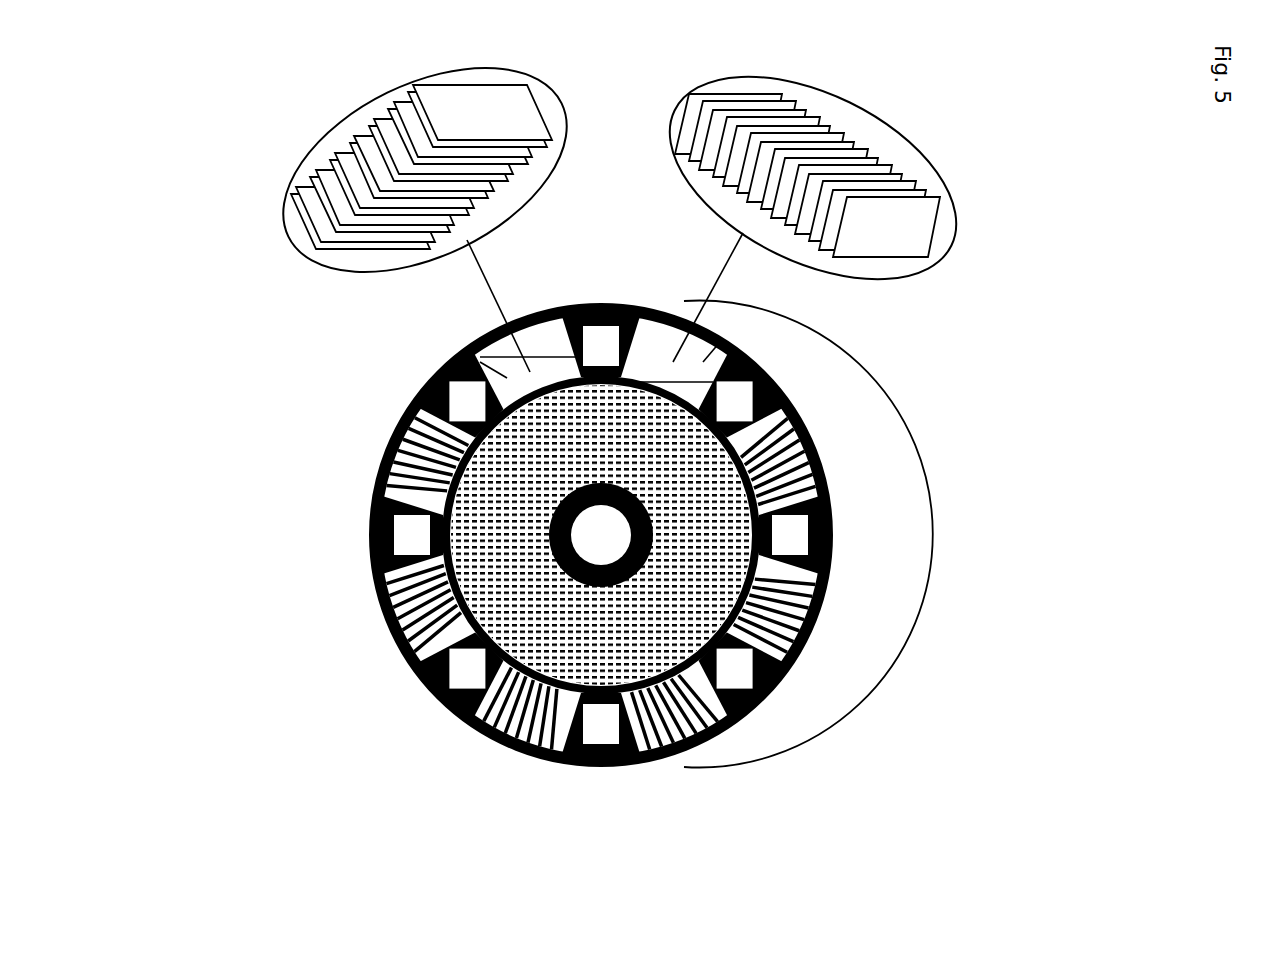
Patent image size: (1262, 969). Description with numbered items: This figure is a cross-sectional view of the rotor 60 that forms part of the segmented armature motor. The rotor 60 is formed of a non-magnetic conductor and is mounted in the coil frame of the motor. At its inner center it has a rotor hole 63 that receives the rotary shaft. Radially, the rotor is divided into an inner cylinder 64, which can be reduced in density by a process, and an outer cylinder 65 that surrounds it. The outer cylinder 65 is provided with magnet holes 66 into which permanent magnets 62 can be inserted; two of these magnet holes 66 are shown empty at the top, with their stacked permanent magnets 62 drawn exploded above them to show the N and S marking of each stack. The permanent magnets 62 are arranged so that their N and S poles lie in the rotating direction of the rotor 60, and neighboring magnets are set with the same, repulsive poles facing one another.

The rotor 60 is at (863, 537).
The permanent magnet 62 is at (400, 78).
The rotor hole 63 is at (601, 535).
The inner cylinder 64 is at (410, 675).
The outer cylinder 65 is at (370, 538).
The magnet hole 66 is at (445, 352).